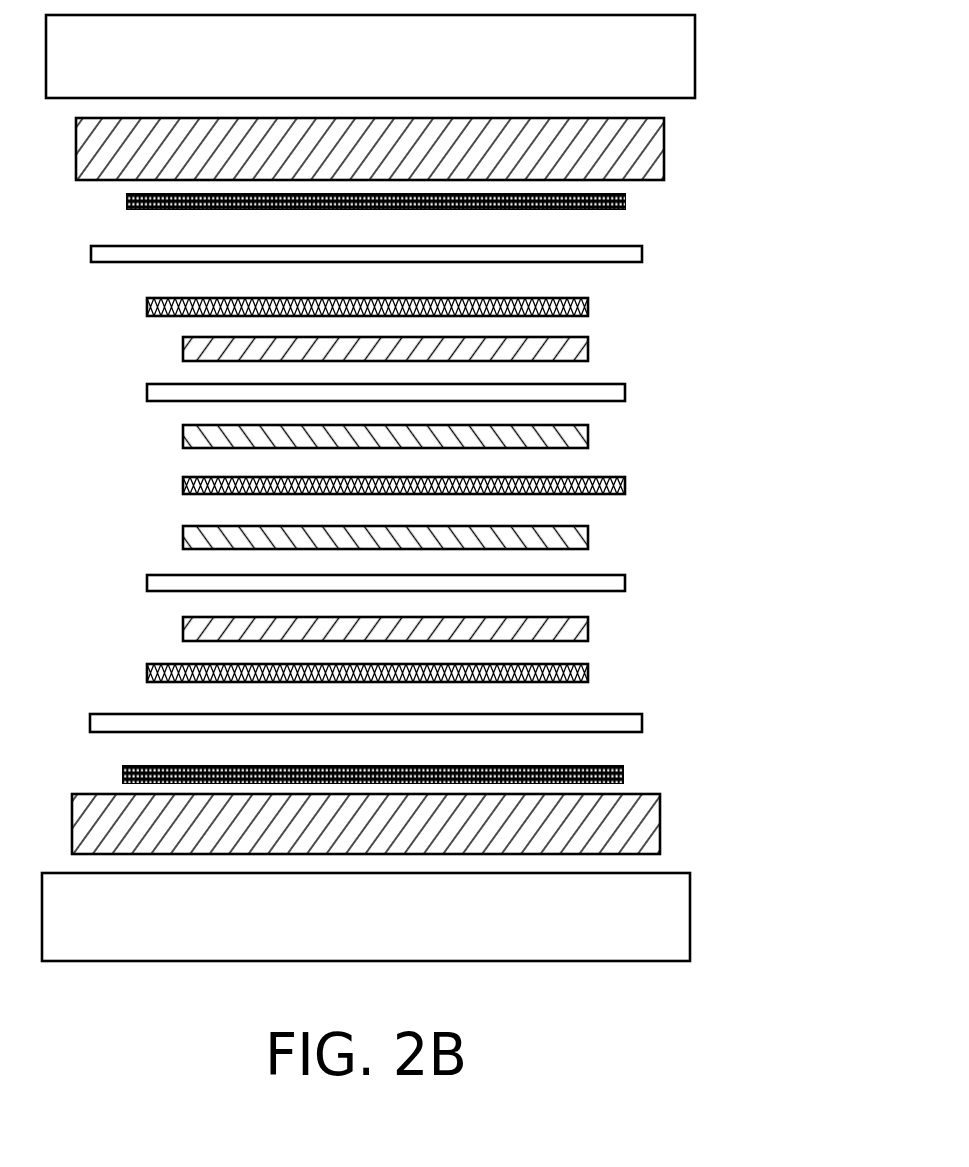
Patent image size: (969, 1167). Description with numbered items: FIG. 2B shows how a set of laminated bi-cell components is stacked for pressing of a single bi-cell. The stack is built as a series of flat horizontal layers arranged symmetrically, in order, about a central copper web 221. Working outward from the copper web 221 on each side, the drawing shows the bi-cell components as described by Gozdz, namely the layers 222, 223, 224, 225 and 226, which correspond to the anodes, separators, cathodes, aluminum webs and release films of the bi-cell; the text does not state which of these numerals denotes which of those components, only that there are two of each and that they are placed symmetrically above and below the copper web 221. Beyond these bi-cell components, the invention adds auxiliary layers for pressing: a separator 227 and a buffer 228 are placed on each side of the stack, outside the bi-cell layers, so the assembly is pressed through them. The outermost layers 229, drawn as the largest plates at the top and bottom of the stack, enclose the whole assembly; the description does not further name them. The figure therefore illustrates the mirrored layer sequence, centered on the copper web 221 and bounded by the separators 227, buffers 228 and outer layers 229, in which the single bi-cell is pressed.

The copper web 221 is at (625, 487).
The electrode layer 222 is at (183, 437).
The current collector layer 223 is at (625, 392).
The electrode layer 224 is at (183, 349).
The separator / mesh layer 225 is at (588, 307).
The plate layer 226 is at (642, 254).
The separator 227 is at (625, 202).
The buffer 228 is at (664, 148).
The outer housing plate 229 is at (695, 62).